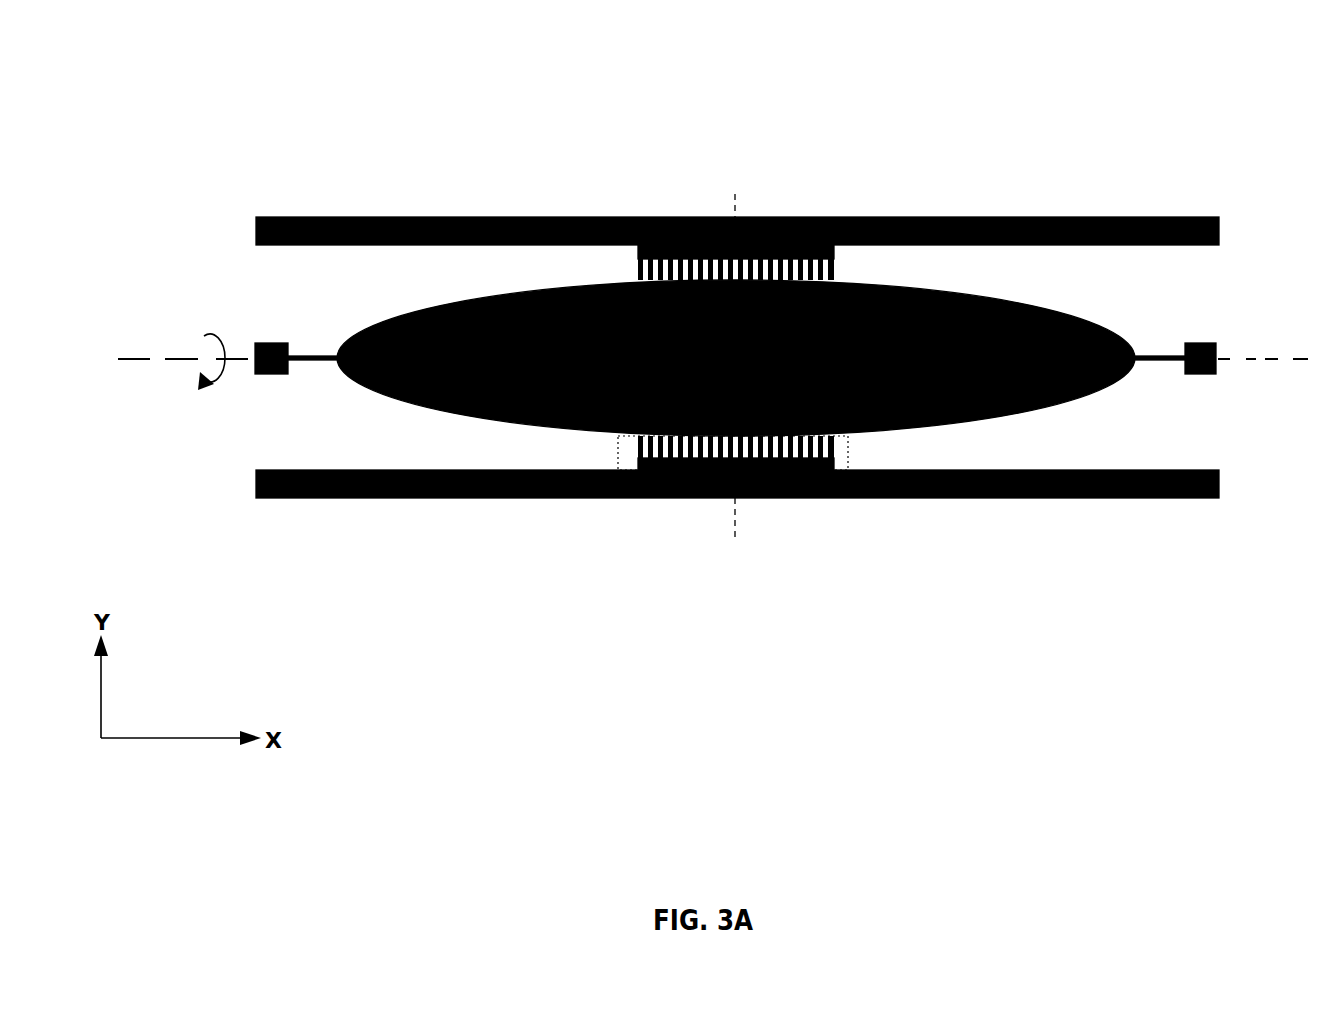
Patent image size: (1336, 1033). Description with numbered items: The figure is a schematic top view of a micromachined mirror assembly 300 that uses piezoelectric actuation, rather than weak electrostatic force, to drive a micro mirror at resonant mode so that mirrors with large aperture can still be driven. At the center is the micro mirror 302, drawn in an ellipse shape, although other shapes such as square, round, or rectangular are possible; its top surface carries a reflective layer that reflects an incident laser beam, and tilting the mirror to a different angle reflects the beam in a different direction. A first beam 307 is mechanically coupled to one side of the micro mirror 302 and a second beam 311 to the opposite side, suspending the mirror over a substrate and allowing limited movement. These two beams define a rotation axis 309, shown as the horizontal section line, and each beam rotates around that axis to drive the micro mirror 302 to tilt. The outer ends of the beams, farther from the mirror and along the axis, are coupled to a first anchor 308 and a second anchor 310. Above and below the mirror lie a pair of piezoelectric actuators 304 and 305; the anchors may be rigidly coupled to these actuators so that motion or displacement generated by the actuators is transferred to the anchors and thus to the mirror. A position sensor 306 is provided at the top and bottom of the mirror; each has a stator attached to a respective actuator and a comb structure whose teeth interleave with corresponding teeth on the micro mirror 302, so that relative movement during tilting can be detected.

The micromachined mirror assembly 300 is at (703, 30).
The micro mirror 302 is at (1020, 407).
The piezoelectric actuator 304 is at (538, 212).
The piezoelectric actuator 305 is at (245, 470).
The position sensor 306 is at (826, 243).
The first beam 307 is at (308, 358).
The first anchor 308 is at (272, 366).
The rotation axis 309 is at (172, 350).
The second anchor 310 is at (1212, 360).
The second beam 311 is at (1165, 345).